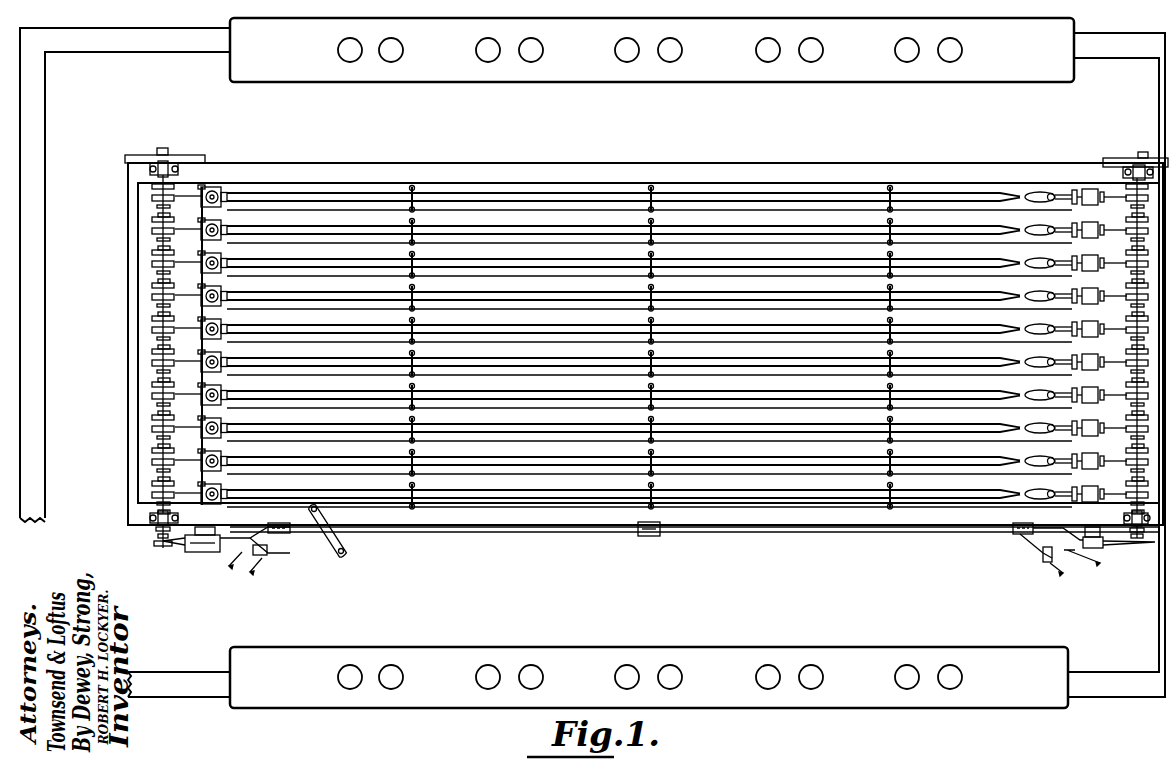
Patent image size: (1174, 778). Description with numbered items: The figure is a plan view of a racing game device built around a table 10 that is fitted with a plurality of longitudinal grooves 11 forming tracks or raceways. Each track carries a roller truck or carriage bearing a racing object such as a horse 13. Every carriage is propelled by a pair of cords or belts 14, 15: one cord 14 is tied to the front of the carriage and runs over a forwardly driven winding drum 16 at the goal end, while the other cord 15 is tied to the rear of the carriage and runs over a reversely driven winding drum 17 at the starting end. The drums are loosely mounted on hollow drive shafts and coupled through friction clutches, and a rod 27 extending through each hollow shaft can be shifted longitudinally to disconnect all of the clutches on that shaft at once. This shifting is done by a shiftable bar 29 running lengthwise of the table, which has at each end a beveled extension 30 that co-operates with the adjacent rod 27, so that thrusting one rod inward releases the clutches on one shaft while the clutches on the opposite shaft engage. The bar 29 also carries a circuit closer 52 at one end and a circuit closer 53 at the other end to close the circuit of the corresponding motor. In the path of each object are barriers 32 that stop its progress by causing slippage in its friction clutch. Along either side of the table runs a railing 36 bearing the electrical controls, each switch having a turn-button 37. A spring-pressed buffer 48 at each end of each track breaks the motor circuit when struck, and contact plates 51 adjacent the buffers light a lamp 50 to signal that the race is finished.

The table 10 is at (749, 182).
The longitudinal grooves 11 is at (532, 193).
The horse 13 is at (1036, 195).
The cord or belt 14 is at (940, 193).
The cord or belt 15 is at (1112, 268).
The forwardly driven winding drum 16 is at (165, 226).
The reversely driven winding drum 17 is at (1130, 394).
The rod 27 is at (160, 552).
The shiftable bar 29 is at (528, 525).
The beveled extension 30 is at (182, 549).
The barriers 32 is at (414, 187).
The railing 36 is at (584, 80).
The turn-button 37 is at (539, 679).
The spring-pressed buffer 48 is at (222, 505).
The lamp 50 is at (216, 188).
The contact plates 51 is at (201, 285).
The circuit closer 52 is at (238, 561).
The circuit closer 53 is at (1062, 557).